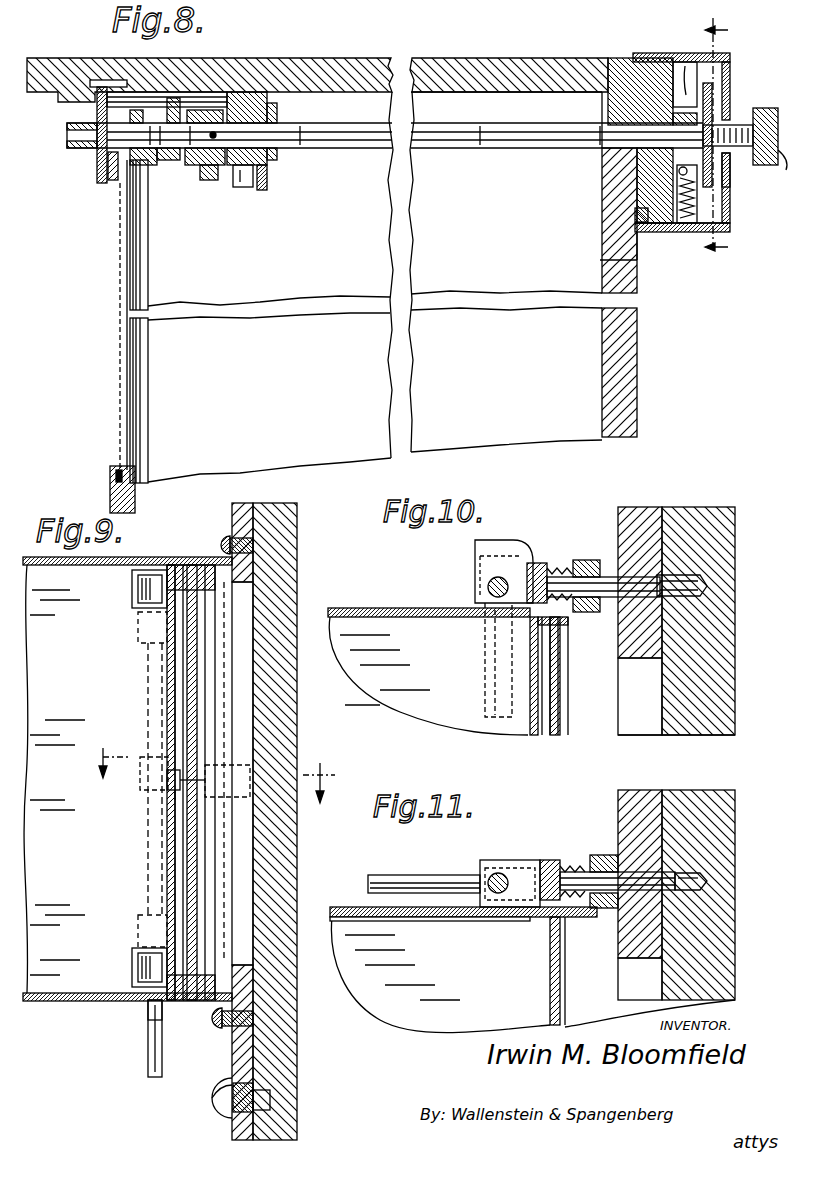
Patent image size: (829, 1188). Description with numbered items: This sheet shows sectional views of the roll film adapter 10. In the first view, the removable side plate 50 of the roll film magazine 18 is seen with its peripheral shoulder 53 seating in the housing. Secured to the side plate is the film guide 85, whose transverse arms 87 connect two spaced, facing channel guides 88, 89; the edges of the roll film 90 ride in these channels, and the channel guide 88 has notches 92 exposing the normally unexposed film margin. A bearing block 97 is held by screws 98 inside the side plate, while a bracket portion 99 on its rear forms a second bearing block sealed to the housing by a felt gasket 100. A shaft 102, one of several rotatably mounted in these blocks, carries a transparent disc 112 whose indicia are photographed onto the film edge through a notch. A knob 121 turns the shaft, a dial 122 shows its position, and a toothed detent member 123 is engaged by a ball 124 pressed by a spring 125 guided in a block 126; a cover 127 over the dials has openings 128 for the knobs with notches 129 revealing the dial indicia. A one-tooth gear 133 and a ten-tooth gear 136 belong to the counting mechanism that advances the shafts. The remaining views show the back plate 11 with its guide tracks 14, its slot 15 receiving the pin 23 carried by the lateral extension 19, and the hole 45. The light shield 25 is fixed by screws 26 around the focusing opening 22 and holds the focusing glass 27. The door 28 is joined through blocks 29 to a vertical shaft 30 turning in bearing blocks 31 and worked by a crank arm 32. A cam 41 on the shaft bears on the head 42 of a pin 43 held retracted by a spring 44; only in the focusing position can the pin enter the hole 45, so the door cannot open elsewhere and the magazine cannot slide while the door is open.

In FIG. 9, the roll film adapter 10 is at (200, 771).
In FIG. 9, the back plate 11 is at (297, 708).
In FIG. 10, the back plate 11 is at (712, 660).
In FIG. 11, the back plate 11 is at (698, 895).
In FIG. 8, the guide tracks 14 is at (712, 271).
In FIG. 9, the horizontal groove or slot 15 is at (268, 1100).
In FIG. 8, the roll film magazine 18 is at (637, 293).
In FIG. 9, the lateral extension 19 is at (240, 1066).
In FIG. 10, the lateral extension 19 is at (630, 507).
In FIG. 11, the lateral extension 19 is at (640, 800).
In FIG. 9, the viewing or focusing opening 22 is at (243, 952).
In FIG. 10, the viewing or focusing opening 22 is at (650, 708).
In FIG. 11, the viewing or focusing opening 22 is at (645, 975).
In FIG. 9, the pin 23 is at (215, 1103).
In FIG. 9, the light shield 25 is at (55, 1003).
In FIG. 10, the light shield 25 is at (396, 607).
In FIG. 11, the light shield 25 is at (340, 906).
In FIG. 9, the screws 26 is at (220, 542).
In FIG. 9, the focusing glass 27 is at (190, 705).
In FIG. 10, the focusing glass 27 is at (560, 702).
In FIG. 11, the focusing glass 27 is at (552, 986).
In FIG. 9, the door 28 is at (170, 845).
In FIG. 10, the door 28 is at (530, 678).
In FIG. 11, the door 28 is at (400, 920).
In FIG. 9, the blocks 29 is at (135, 590).
In FIG. 10, the blocks 29 is at (535, 562).
In FIG. 11, the blocks 29 is at (545, 860).
In FIG. 9, the vertical shaft 30 is at (150, 1010).
In FIG. 10, the vertical shaft 30 is at (488, 580).
In FIG. 11, the vertical shaft 30 is at (499, 873).
In FIG. 9, the bearing blocks 31 is at (135, 633).
In FIG. 9, the crank arm 32 is at (150, 1058).
In FIG. 10, the crank arm 32 is at (490, 702).
In FIG. 11, the crank arm 32 is at (428, 876).
In FIG. 9, the cam 41 is at (150, 760).
In FIG. 10, the cam 41 is at (478, 553).
In FIG. 11, the cam 41 is at (515, 908).
In FIG. 10, the head 42 is at (553, 567).
In FIG. 11, the head 42 is at (565, 865).
In FIG. 9, the pin 43 is at (178, 800).
In FIG. 10, the pin 43 is at (632, 577).
In FIG. 11, the pin 43 is at (640, 876).
In FIG. 10, the spring 44 is at (580, 560).
In FIG. 11, the spring 44 is at (600, 856).
In FIG. 10, the hole 45 is at (695, 576).
In FIG. 11, the hole 45 is at (702, 874).
In FIG. 8, the removable side plate 50 is at (488, 60).
In FIG. 8, the shoulder 53 is at (600, 60).
In FIG. 8, the film guide 85 is at (140, 228).
In FIG. 8, the transverse arms 87 is at (148, 375).
In FIG. 8, the channel guide 88 is at (103, 183).
In FIG. 8, the channel guide 89 is at (115, 492).
In FIG. 8, the roll film 90 is at (113, 392).
In FIG. 8, the notches 92 is at (97, 174).
In FIG. 8, the bearing block 97 is at (278, 158).
In FIG. 8, the screws 98 is at (265, 190).
In FIG. 8, the bracket portion 99 is at (650, 186).
In FIG. 8, the felt gasket 100 is at (640, 215).
In FIG. 8, the shaft 102 is at (462, 146).
In FIG. 8, the transparent disc 112 is at (97, 155).
In FIG. 8, the knobs 121 is at (737, 162).
In FIG. 8, the dial 122 is at (712, 85).
In FIG. 8, the detent member 123 is at (692, 55).
In FIG. 8, the ball 124 is at (679, 171).
In FIG. 8, the spring 125 is at (690, 200).
In FIG. 8, the block 126 is at (732, 218).
In FIG. 8, the cover 127 is at (730, 58).
In FIG. 8, the openings 128 is at (730, 120).
In FIG. 8, the notches 129 is at (731, 198).
In FIG. 8, the one-tooth gear 133 is at (215, 170).
In FIG. 8, the ten-tooth gear 136 is at (160, 170).